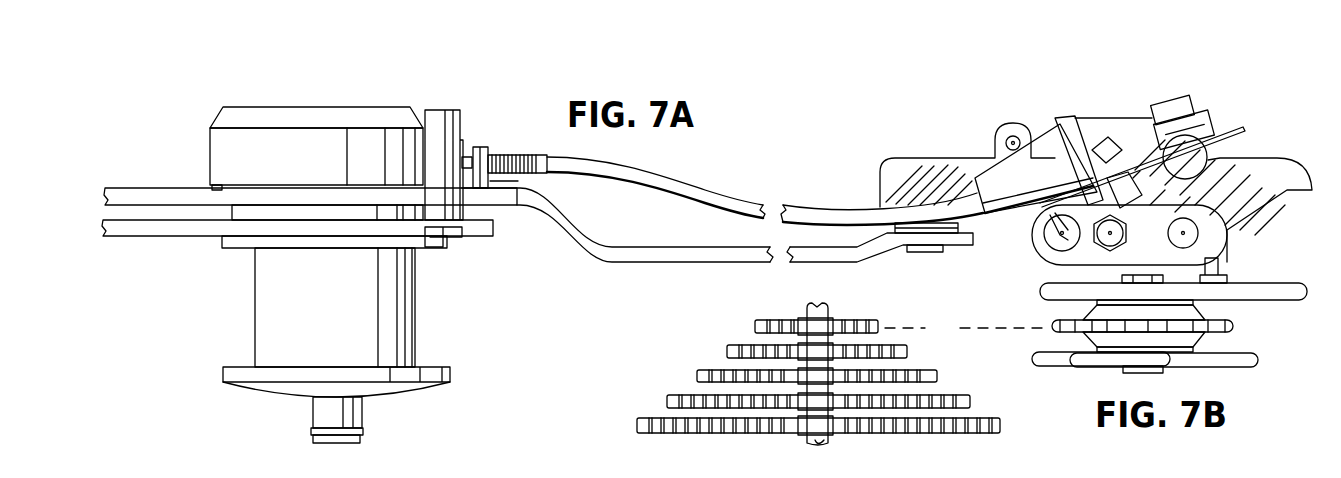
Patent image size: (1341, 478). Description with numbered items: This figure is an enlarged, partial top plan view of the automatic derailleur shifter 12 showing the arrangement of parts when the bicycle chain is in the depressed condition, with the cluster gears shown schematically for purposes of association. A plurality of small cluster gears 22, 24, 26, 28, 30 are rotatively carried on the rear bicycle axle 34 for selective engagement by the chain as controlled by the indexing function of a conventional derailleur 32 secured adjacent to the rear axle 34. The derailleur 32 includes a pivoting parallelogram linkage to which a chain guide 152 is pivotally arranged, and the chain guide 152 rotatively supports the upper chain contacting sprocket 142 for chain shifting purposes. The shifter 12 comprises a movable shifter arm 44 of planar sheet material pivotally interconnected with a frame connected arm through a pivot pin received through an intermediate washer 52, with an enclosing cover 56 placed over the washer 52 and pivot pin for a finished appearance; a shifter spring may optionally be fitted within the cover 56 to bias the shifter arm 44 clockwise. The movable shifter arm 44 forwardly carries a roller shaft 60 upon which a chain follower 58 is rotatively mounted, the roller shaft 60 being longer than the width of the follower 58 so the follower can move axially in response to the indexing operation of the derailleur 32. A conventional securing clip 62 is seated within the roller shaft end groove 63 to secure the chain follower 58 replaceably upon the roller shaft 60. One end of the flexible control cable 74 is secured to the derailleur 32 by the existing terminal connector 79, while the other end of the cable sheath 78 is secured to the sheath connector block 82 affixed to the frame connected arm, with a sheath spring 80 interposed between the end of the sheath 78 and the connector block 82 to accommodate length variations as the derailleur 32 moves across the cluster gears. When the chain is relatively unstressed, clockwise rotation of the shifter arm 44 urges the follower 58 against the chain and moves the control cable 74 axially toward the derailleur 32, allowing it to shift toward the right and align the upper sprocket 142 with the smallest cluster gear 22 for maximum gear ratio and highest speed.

In FIG. 7A, the automatic derailleur shifter 12 is at (666, 266).
In FIG. 7B, the smallest cluster gear 22 is at (878, 325).
In FIG. 7B, the cluster gear 24 is at (888, 338).
In FIG. 7B, the cluster gear 26 is at (937, 375).
In FIG. 7B, the cluster gear 28 is at (970, 400).
In FIG. 7B, the cluster gear 30 is at (1000, 425).
In FIG. 7B, the derailleur 32 is at (1104, 117).
In FIG. 7B, the rear bicycle axle 34 is at (825, 440).
In FIG. 7A, the movable shifter arm 44 is at (495, 226).
In FIG. 7A, the washer 52 is at (222, 186).
In FIG. 7A, the enclosing cover 56 is at (362, 148).
In FIG. 7A, the chain follower 58 is at (413, 334).
In FIG. 7A, the roller shaft 60 is at (330, 443).
In FIG. 7A, the securing clip 62 is at (363, 432).
In FIG. 7A, the roller shaft end groove 63 is at (340, 436).
In FIG. 7B, the flexible control cable 74 is at (1244, 128).
In FIG. 7A, the cable sheath 78 is at (715, 190).
In FIG. 7B, the terminal connector 79 is at (1033, 178).
In FIG. 7A, the sheath spring 80 is at (520, 156).
In FIG. 7A, the sheath connector block 82 is at (490, 183).
In FIG. 7B, the upper chain contacting sprocket 142 is at (1238, 327).
In FIG. 7B, the chain guide 152 is at (1247, 290).